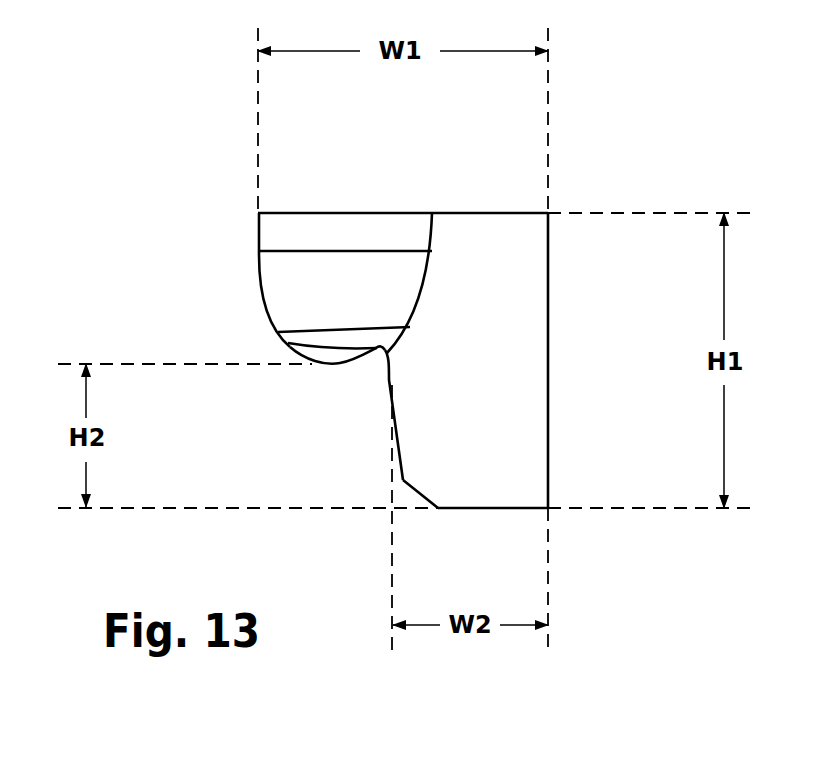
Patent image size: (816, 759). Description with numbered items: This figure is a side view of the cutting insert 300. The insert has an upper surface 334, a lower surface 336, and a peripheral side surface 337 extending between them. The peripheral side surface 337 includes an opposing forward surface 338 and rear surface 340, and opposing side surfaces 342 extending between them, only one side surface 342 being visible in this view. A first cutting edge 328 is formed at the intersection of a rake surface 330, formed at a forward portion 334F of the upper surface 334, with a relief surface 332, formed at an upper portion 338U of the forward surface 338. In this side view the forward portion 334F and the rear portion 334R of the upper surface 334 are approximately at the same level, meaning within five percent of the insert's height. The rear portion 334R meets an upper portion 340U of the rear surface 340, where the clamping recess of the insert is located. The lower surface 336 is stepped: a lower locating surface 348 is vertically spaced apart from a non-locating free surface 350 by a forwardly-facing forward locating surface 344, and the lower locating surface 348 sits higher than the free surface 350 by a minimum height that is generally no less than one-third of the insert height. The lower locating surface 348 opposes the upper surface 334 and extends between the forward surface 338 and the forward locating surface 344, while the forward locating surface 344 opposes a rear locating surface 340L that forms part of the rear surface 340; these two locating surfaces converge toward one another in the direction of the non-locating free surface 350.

The cutting insert 300 is at (653, 122).
The first cutting edge 328 is at (258, 212).
The rake surface 330 is at (313, 213).
The relief surface 332 is at (254, 236).
The upper surface 334 is at (394, 212).
The forward portion of the upper surface 334F is at (278, 211).
The rear portion of the upper surface 334R is at (549, 211).
The lower surface 336 is at (441, 515).
The peripheral side surface 337 is at (441, 398).
The forward surface 338 is at (253, 320).
The upper portion of the forward surface 338U is at (246, 222).
The rear surface 340 is at (553, 327).
The upper portion of the rear surface 340U is at (553, 226).
The rear locating surface 340L is at (553, 470).
The side surface 342 is at (478, 449).
The forward locating surface 344 is at (400, 462).
The lower locating surface 348 is at (310, 362).
The non-locating free surface 350 is at (478, 509).